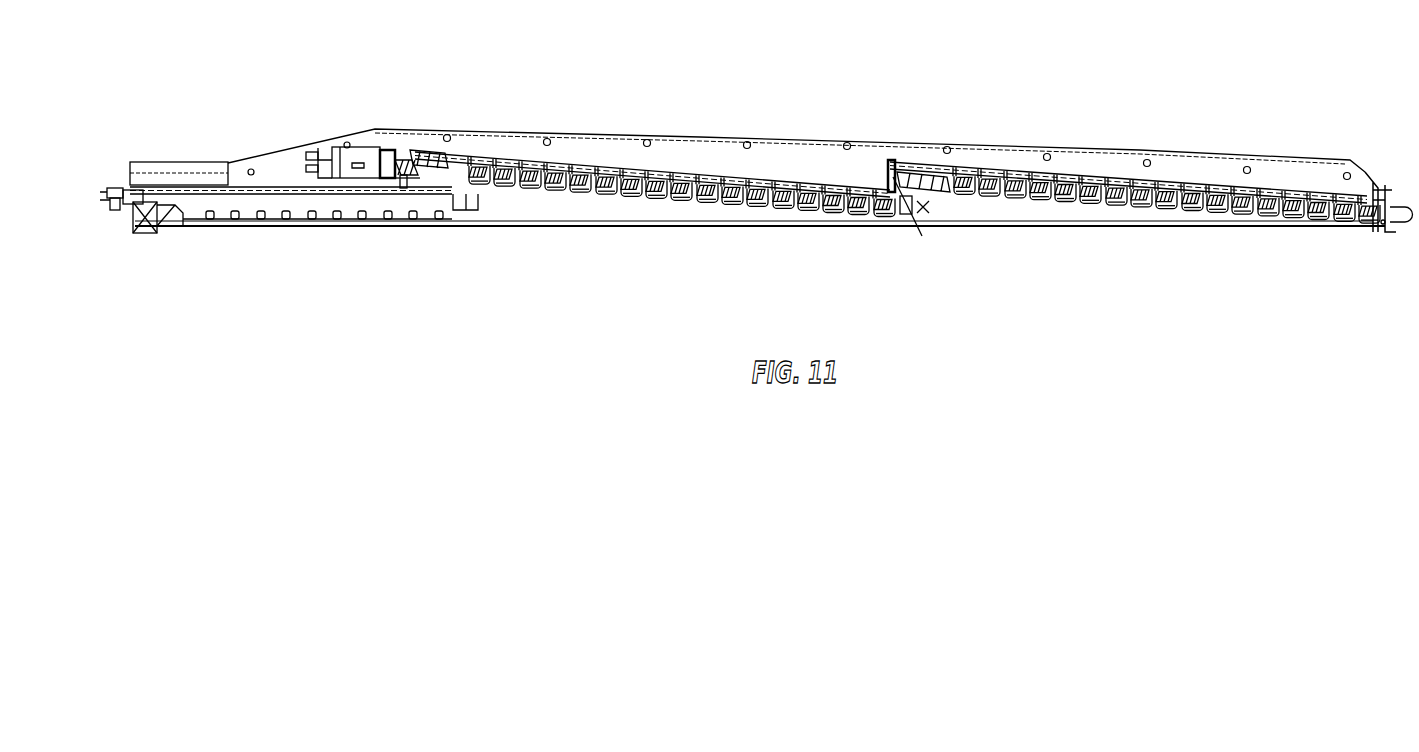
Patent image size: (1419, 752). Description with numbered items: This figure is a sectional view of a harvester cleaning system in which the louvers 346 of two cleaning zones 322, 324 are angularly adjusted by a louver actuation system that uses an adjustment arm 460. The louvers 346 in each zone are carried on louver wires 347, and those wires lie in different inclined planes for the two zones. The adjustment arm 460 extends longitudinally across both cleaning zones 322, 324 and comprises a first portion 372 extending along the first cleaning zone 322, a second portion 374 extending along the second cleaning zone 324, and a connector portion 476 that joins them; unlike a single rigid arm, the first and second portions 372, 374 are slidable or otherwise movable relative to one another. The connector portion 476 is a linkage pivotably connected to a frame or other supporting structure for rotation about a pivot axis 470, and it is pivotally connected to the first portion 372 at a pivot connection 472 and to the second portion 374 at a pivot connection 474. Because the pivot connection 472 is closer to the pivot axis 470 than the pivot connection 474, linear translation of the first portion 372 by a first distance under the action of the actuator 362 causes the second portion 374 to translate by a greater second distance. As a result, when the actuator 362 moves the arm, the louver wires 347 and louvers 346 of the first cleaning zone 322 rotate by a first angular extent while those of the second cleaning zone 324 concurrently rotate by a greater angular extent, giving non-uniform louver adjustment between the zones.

The cleaning zone 322 is at (892, 148).
The cleaning zone 324 is at (1365, 172).
The louver 346 is at (788, 206).
The louver wire 347 is at (1131, 206).
The actuator 362 is at (362, 147).
The first portion 372 is at (637, 198).
The second portion 374 is at (1067, 207).
The adjustment arm 460 is at (1188, 208).
The pivot axis 470 is at (920, 242).
The pivot connection 472 is at (905, 217).
The pivot connection 474 is at (893, 173).
The connector portion 476 is at (928, 214).